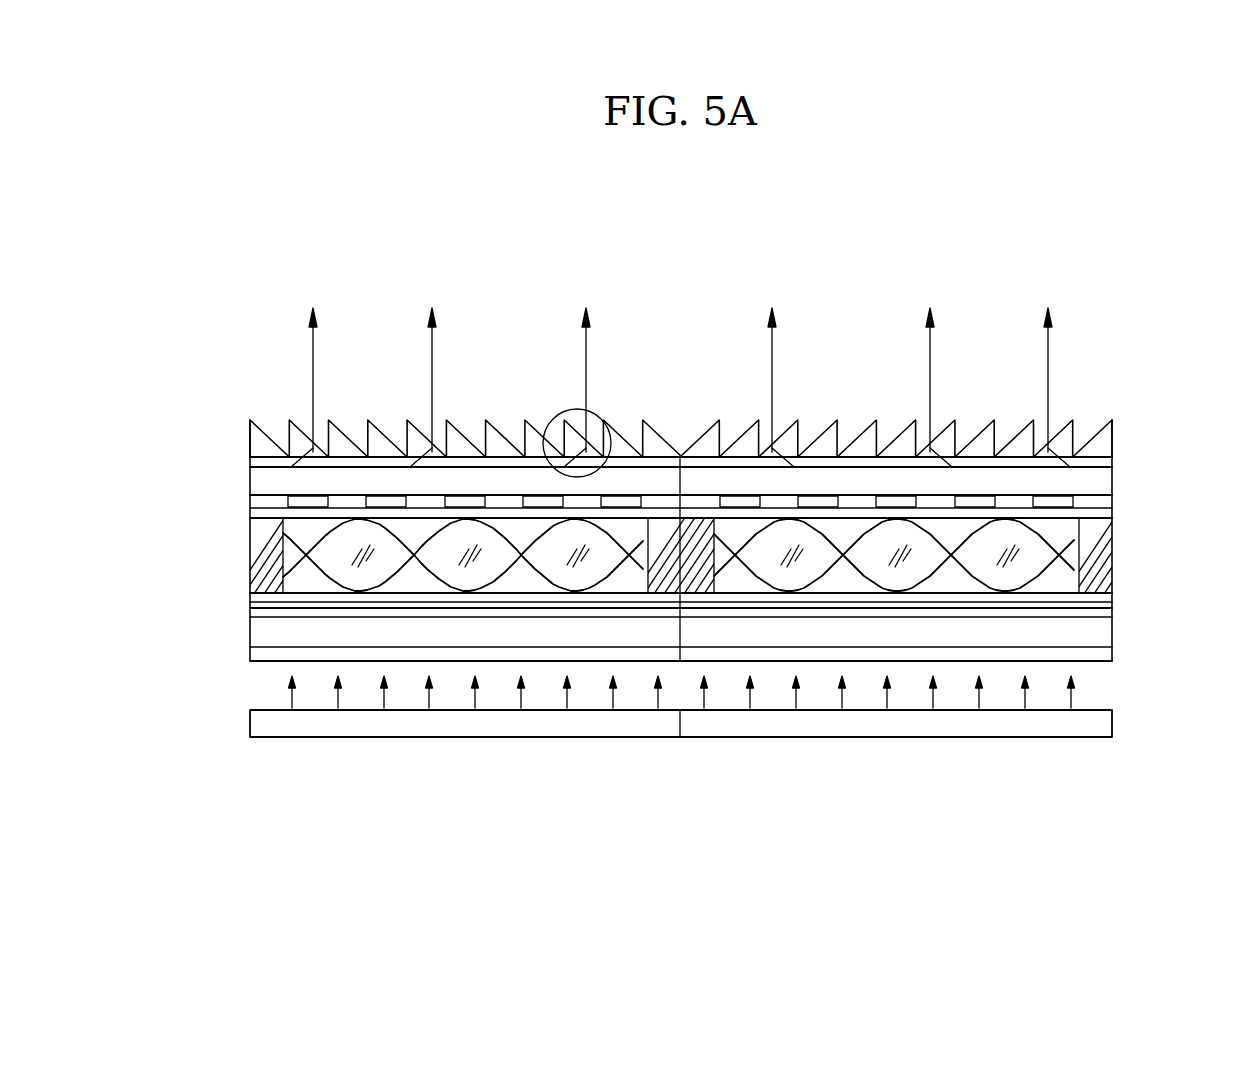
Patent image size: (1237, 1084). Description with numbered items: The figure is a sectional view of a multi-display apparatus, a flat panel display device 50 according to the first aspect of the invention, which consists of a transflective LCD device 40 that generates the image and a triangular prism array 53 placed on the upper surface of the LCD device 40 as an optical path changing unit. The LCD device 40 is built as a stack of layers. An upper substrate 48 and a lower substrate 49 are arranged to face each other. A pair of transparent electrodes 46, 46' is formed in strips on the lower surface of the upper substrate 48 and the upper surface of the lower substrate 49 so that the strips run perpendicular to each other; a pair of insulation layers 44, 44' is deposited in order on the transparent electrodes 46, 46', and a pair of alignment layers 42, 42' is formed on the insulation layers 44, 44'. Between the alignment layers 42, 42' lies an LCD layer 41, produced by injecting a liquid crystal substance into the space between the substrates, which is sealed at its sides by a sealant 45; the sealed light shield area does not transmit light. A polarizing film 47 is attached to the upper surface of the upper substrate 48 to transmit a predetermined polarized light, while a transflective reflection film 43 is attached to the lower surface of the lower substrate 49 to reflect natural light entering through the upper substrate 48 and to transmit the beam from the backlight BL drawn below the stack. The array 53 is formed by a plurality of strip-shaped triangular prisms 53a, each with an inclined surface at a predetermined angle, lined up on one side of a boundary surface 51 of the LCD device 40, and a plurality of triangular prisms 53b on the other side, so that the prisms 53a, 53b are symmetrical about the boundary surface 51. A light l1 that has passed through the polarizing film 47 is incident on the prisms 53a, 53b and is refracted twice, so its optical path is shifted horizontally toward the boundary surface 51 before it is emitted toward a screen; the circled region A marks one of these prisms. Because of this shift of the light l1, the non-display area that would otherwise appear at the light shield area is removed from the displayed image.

The LCD device 40 is at (180, 440).
The LCD layer 41 is at (337, 542).
The alignment layer 42 is at (711, 520).
The alignment layer 42' is at (714, 584).
The transflective reflection film 43 is at (1110, 656).
The insulation layer 44 is at (651, 503).
The insulation layer 44' is at (651, 605).
The sealant 45 is at (253, 560).
The transparent electrode 46 is at (730, 498).
The transparent electrode 46' is at (714, 607).
The polarizing film 47 is at (1112, 463).
The upper substrate 48 is at (1105, 481).
The lower substrate 49 is at (1110, 633).
The flat panel display device 50 is at (1152, 364).
The boundary surface 51 is at (700, 447).
The triangular prism array 53 is at (360, 278).
The triangular prism 53a is at (663, 430).
The triangular prism 53b is at (695, 440).
The backlight BL is at (1112, 724).
The enlarged region A is at (560, 412).
The light l1 is at (590, 362).